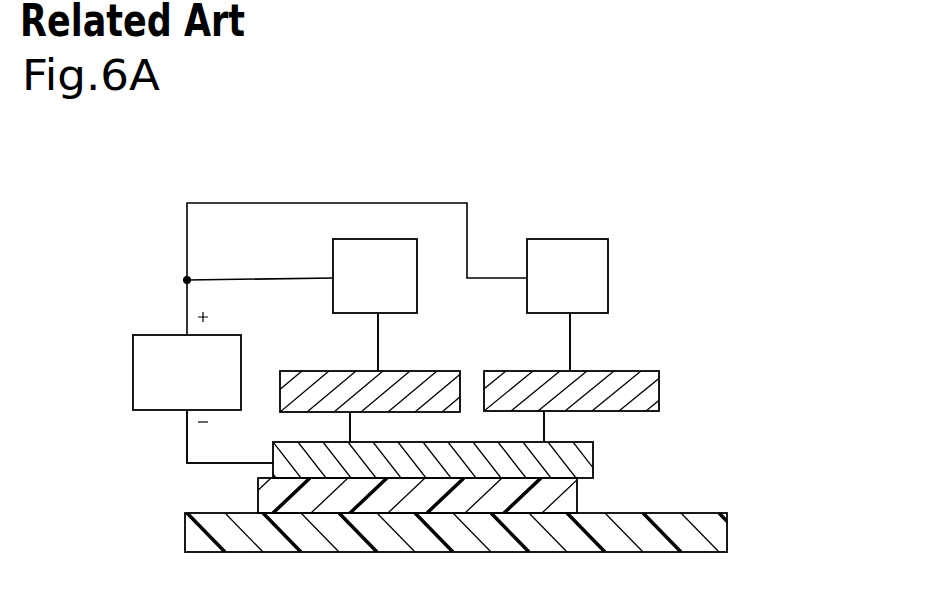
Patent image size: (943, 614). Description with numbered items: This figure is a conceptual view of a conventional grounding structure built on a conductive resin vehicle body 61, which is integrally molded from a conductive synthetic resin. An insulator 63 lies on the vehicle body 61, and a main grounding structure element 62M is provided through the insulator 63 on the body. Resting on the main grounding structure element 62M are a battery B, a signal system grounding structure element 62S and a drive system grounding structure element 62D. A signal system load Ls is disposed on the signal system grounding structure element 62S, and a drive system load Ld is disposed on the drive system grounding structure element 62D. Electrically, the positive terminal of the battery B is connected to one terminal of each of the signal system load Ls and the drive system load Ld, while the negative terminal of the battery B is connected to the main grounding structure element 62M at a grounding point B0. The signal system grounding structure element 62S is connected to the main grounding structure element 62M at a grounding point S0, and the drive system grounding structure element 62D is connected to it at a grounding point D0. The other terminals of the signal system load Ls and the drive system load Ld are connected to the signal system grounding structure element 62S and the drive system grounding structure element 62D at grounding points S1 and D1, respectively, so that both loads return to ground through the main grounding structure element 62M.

The battery B is at (185, 333).
The signal system load Ls is at (368, 239).
The drive system load Ld is at (575, 239).
The grounding point S1 is at (370, 368).
The grounding point D1 is at (564, 368).
The signal system grounding structure element 62S is at (404, 371).
The drive system grounding structure element 62D is at (604, 371).
The grounding point B0 is at (272, 460).
The grounding point S0 is at (349, 441).
The grounding point D0 is at (542, 441).
The main grounding structure element 62M is at (593, 448).
The insulator 63 is at (577, 494).
The conductive resin vehicle body 61 is at (727, 527).